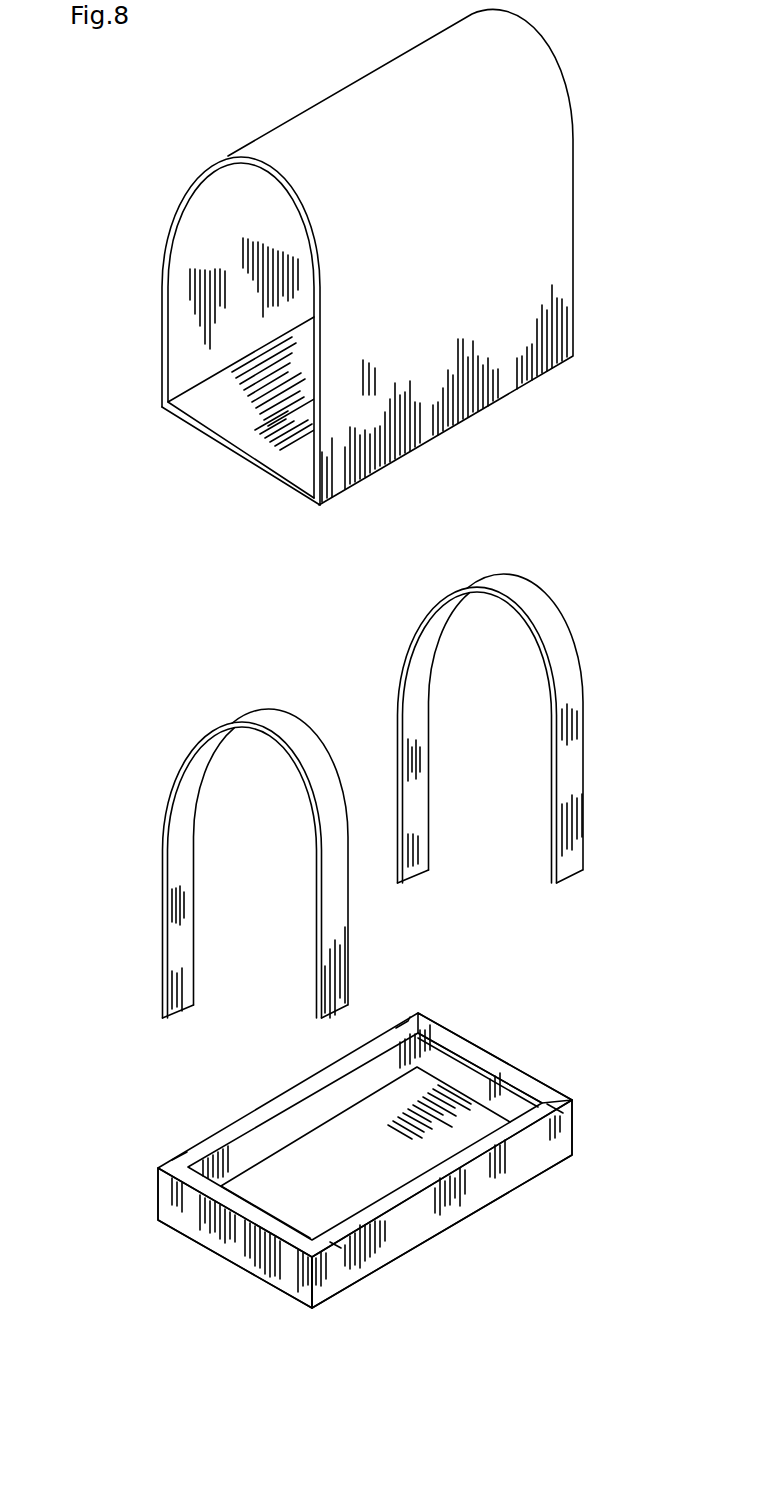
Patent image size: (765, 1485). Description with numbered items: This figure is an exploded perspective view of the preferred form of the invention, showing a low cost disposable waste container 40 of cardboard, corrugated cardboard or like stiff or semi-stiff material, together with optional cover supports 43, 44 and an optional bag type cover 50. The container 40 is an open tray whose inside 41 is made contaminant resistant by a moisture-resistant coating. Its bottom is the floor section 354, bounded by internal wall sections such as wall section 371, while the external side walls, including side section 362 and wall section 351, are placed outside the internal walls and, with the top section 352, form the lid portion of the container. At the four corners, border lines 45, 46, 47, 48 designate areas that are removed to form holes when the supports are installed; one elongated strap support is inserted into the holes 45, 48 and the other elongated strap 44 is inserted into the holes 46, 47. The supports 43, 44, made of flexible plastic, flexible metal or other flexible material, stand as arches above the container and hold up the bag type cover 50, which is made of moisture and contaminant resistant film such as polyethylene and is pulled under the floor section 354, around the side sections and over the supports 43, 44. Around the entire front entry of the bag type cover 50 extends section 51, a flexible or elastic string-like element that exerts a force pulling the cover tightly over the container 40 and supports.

The disposable waste container 40 is at (368, 1154).
The inside of the container 41 is at (263, 1184).
The cover support 43 is at (190, 795).
The cover support 44 is at (545, 608).
The hole 45 is at (416, 1013).
The hole 46 is at (563, 1101).
The hole 47 is at (333, 1244).
The hole 48 is at (170, 1160).
The bag type cover 50 is at (340, 257).
The section 51 is at (178, 209).
The wall section 351 is at (414, 1236).
The top section 352 is at (487, 1065).
The floor section 354 is at (331, 1191).
The side section 362 is at (200, 1229).
The wall section 371 is at (503, 1107).